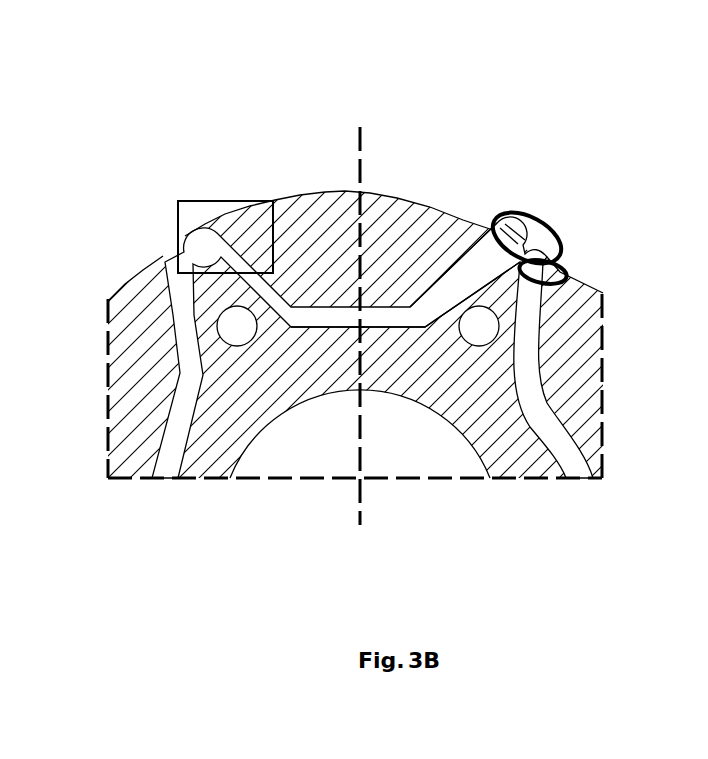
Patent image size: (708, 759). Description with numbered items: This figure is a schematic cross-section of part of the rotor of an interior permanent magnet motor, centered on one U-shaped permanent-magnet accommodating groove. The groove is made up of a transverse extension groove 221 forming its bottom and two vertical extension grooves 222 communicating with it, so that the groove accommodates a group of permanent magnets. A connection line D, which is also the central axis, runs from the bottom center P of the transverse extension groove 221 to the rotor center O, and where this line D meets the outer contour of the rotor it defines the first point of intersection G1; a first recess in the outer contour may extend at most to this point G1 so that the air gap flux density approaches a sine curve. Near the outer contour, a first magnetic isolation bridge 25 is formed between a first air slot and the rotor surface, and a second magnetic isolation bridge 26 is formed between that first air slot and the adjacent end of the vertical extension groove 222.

The vertical extension groove 222 is at (273, 298).
The transverse extension groove 221 is at (390, 318).
The first magnetic isolation bridge 25 is at (520, 220).
The second magnetic isolation bridge 26 is at (566, 268).
The connection line D is at (365, 116).
The first point of intersection G1 is at (358, 193).
The bottom center of the U-shaped permanent-magnet accommodating groove P is at (357, 329).
The rotor center O is at (361, 482).